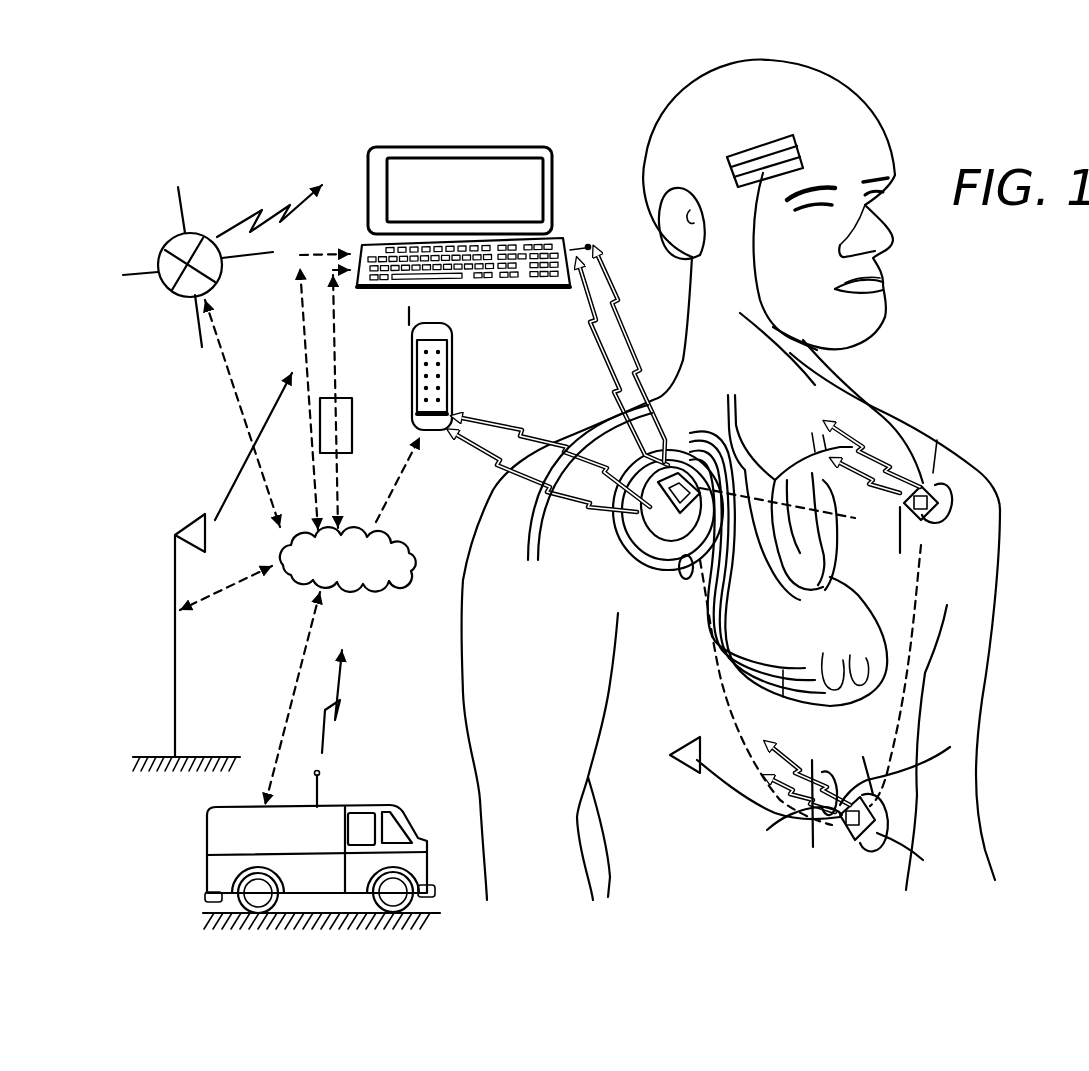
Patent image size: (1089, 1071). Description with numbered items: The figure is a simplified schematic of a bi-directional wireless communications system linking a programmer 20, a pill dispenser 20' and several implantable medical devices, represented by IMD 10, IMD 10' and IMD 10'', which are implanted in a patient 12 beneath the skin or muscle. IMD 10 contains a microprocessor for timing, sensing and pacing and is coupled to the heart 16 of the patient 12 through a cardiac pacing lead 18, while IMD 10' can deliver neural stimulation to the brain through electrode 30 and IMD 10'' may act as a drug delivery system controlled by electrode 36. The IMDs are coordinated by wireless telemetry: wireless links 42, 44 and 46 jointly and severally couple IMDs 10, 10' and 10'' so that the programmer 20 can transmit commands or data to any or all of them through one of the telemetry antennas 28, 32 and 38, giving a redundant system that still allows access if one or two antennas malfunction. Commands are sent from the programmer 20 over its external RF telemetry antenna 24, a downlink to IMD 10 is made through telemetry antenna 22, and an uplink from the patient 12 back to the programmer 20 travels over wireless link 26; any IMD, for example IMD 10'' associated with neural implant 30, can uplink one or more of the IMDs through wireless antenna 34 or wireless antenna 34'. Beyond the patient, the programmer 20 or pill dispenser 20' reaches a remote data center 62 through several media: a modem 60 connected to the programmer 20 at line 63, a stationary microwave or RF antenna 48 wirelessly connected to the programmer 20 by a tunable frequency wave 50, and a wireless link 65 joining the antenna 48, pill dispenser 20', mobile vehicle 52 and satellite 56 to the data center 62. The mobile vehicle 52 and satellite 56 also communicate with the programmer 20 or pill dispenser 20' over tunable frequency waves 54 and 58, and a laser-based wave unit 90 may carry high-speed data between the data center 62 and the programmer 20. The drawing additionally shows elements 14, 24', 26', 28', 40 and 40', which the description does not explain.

The implantable medical device 10 is at (652, 522).
The implantable medical device 10' is at (899, 818).
The implantable medical device 10'' is at (950, 488).
The patient 12 is at (968, 450).
The lead connector / sensor 14 is at (685, 582).
The heart 16 is at (843, 720).
The cardiac pacing lead 18 is at (787, 720).
The programmer 20 is at (474, 189).
The pill dispenser 20' is at (465, 376).
The telemetry antenna 22 is at (576, 369).
The external RF telemetry antenna 24 is at (624, 330).
The antenna of portable device 24' is at (383, 315).
The wireless link 26 is at (636, 359).
The telemetry signal to portable device 26' is at (556, 446).
The telemetry antenna 28 is at (741, 521).
The telemetry signal 28' is at (554, 482).
The electrode 30 is at (745, 148).
The telemetry antenna 32 is at (937, 463).
The wireless antenna 34 is at (788, 518).
The wireless antenna 34' is at (882, 439).
The electrode 36 is at (690, 765).
The telemetry antenna 38 is at (869, 763).
The antenna loop 40 is at (794, 821).
The lead 40' is at (823, 820).
The wireless link 42 is at (890, 539).
The wireless link 44 is at (925, 584).
The wireless link 46 is at (728, 693).
The stationary microwave and/or RF antenna 48 is at (178, 682).
The tunable frequency wave 50 is at (258, 446).
The mobile vehicle 52 is at (208, 850).
The tunable frequency wave 54 is at (328, 757).
The satellite 56 is at (165, 250).
The tunable frequency wave 58 is at (238, 227).
The modem 60 is at (353, 422).
The data center 62 is at (385, 583).
The line 63 is at (338, 348).
The wireless link 65 is at (302, 352).
The wave unit 90 is at (300, 278).